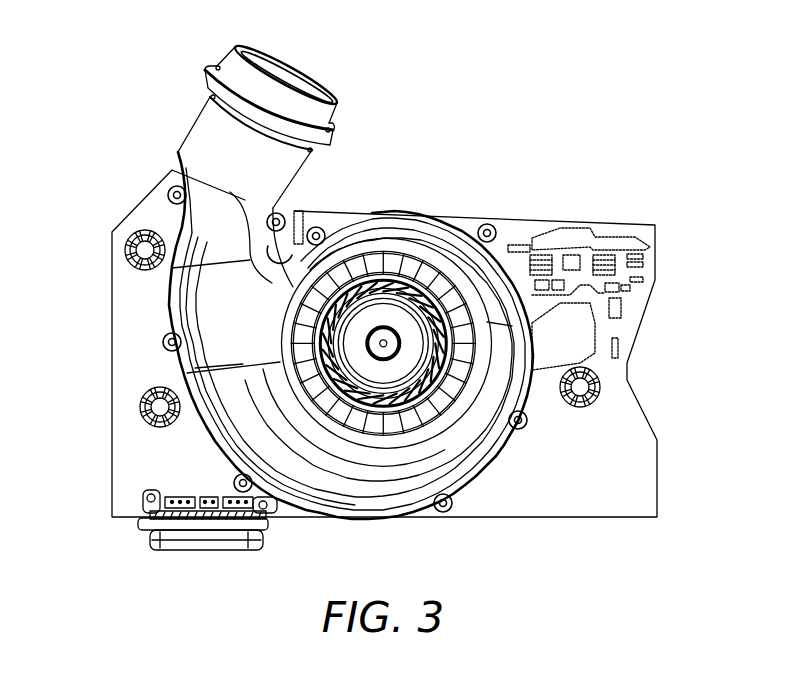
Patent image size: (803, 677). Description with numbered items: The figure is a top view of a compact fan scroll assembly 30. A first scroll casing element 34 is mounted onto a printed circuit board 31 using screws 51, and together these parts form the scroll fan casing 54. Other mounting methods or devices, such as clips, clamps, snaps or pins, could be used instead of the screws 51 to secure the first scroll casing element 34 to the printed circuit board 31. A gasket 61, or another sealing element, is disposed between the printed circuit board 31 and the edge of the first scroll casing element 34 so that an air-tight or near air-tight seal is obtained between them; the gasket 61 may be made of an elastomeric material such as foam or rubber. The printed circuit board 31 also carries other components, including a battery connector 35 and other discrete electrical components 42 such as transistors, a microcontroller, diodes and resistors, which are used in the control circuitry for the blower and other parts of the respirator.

The compact fan scroll assembly 30 is at (530, 137).
The printed circuit board 31 is at (130, 295).
The first scroll casing element 34 is at (483, 467).
The battery connector 35 is at (200, 543).
The discrete electrical components 42 is at (603, 258).
The screws 51 is at (525, 432).
The scroll fan casing 54 is at (480, 217).
The gasket 61 is at (335, 518).